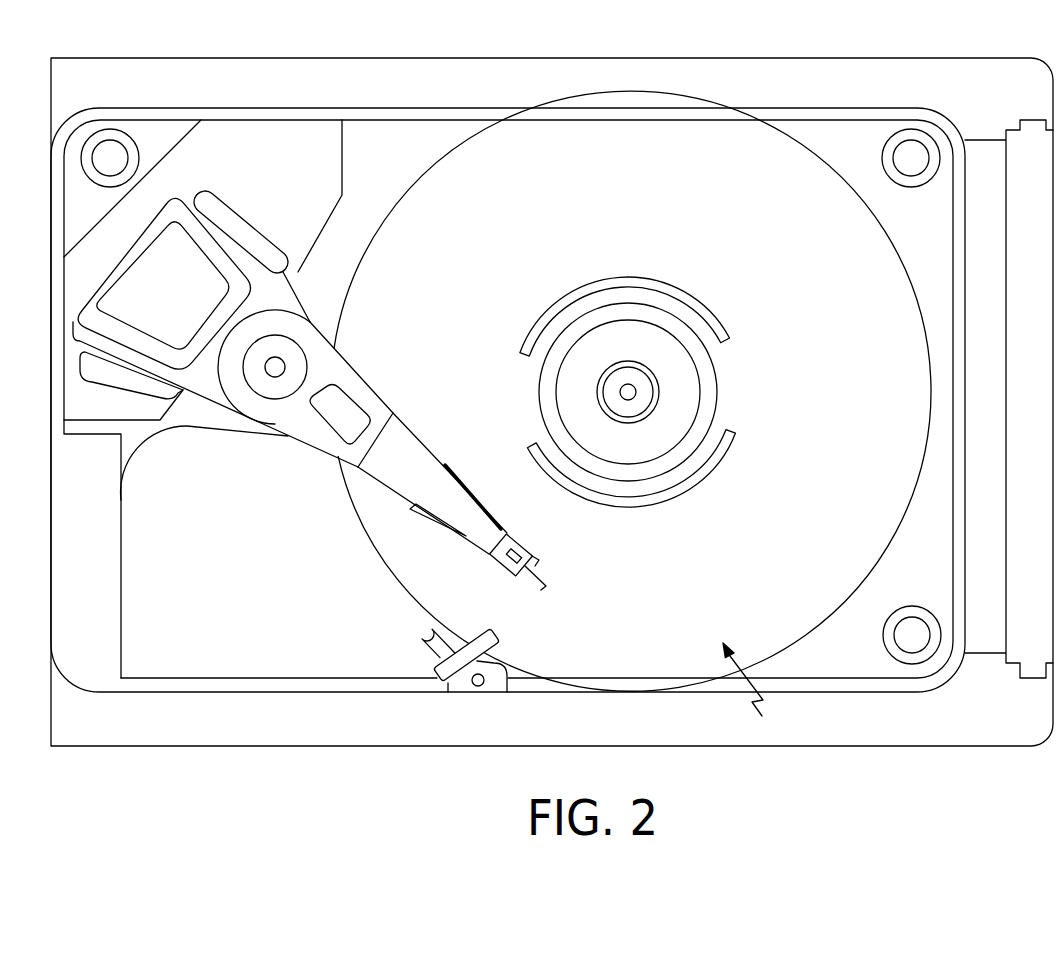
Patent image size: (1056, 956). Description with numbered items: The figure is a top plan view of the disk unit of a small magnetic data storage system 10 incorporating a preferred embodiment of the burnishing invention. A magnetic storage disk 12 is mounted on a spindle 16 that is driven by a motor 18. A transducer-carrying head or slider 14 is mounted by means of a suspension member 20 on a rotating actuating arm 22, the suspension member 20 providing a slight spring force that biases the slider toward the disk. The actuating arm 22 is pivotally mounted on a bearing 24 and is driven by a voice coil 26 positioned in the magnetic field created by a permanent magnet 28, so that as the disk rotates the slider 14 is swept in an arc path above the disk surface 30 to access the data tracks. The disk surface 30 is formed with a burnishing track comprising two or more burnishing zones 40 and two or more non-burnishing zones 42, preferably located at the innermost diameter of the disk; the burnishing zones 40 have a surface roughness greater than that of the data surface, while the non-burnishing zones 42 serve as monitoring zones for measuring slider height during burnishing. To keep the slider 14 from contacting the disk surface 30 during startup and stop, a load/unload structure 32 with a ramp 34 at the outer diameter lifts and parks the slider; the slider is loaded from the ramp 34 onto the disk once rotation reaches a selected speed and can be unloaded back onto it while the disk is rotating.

The magnetic data storage system 10 is at (435, 58).
The magnetic storage disk 12 is at (783, 306).
The slider 14 is at (521, 545).
The spindle 16 is at (610, 367).
The motor 18 is at (641, 303).
The suspension member 20 is at (417, 433).
The actuating arm 22 is at (363, 378).
The bearing 24 is at (305, 338).
The voice coil 26 is at (176, 190).
The permanent magnet 28 is at (247, 205).
The disk surface 30 is at (761, 687).
The load/unload structure 32 is at (420, 637).
The ramp 34 is at (500, 640).
The burnishing zone 40 is at (700, 300).
The non-burnishing zone 42 is at (733, 372).